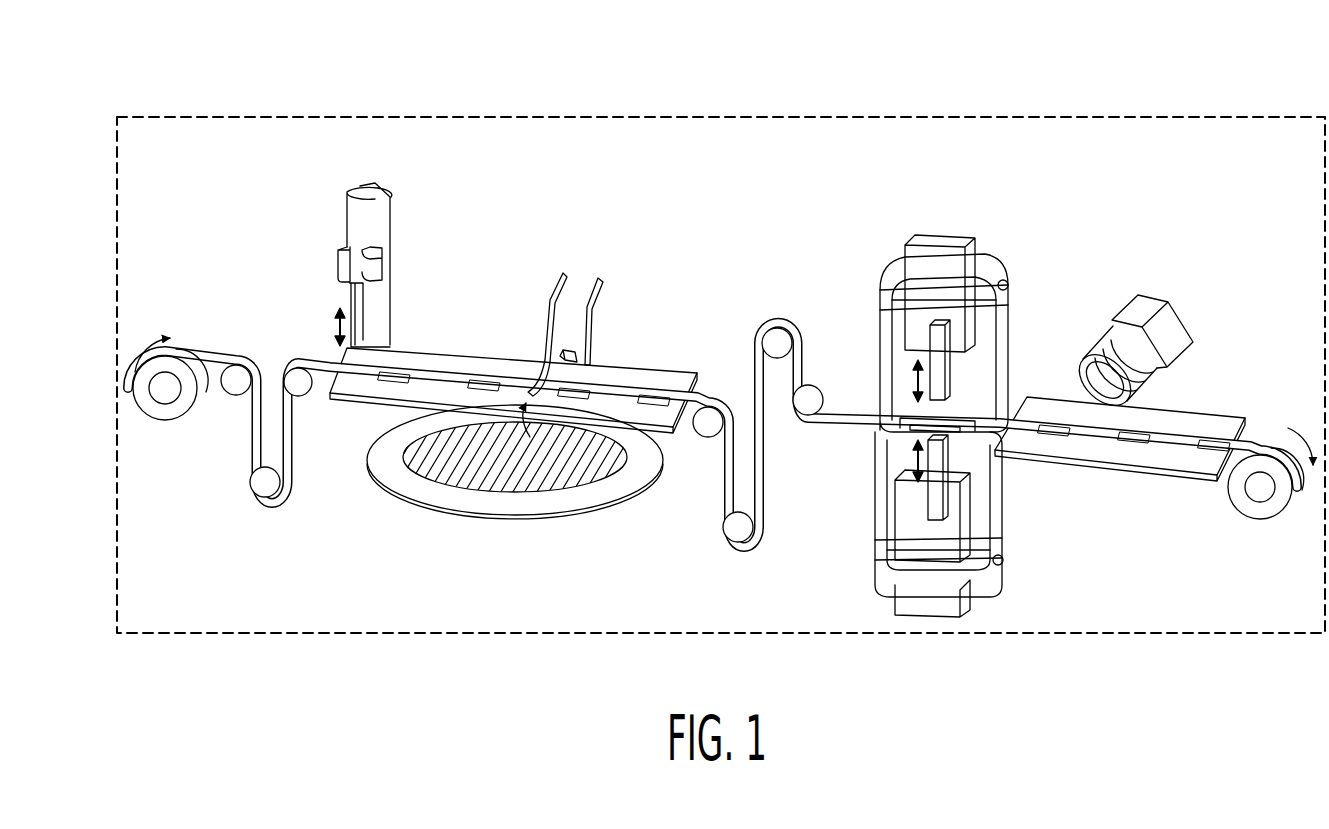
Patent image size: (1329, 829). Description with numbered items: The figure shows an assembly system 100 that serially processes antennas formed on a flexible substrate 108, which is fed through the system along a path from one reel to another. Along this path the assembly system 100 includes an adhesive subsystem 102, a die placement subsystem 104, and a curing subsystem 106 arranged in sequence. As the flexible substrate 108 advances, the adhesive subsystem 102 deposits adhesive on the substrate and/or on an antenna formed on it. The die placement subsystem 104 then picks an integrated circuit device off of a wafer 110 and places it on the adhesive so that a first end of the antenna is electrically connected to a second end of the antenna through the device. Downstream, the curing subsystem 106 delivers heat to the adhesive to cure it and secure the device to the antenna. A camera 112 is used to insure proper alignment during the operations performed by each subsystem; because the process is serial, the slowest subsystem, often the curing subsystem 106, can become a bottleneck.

The assembly system 100 is at (183, 117).
The adhesive subsystem 102 is at (430, 178).
The die placement subsystem 104 is at (610, 268).
The curing subsystem 106 is at (1015, 222).
The flexible substrate 108 is at (255, 440).
The wafer 110 is at (567, 467).
The camera 112 is at (1188, 325).